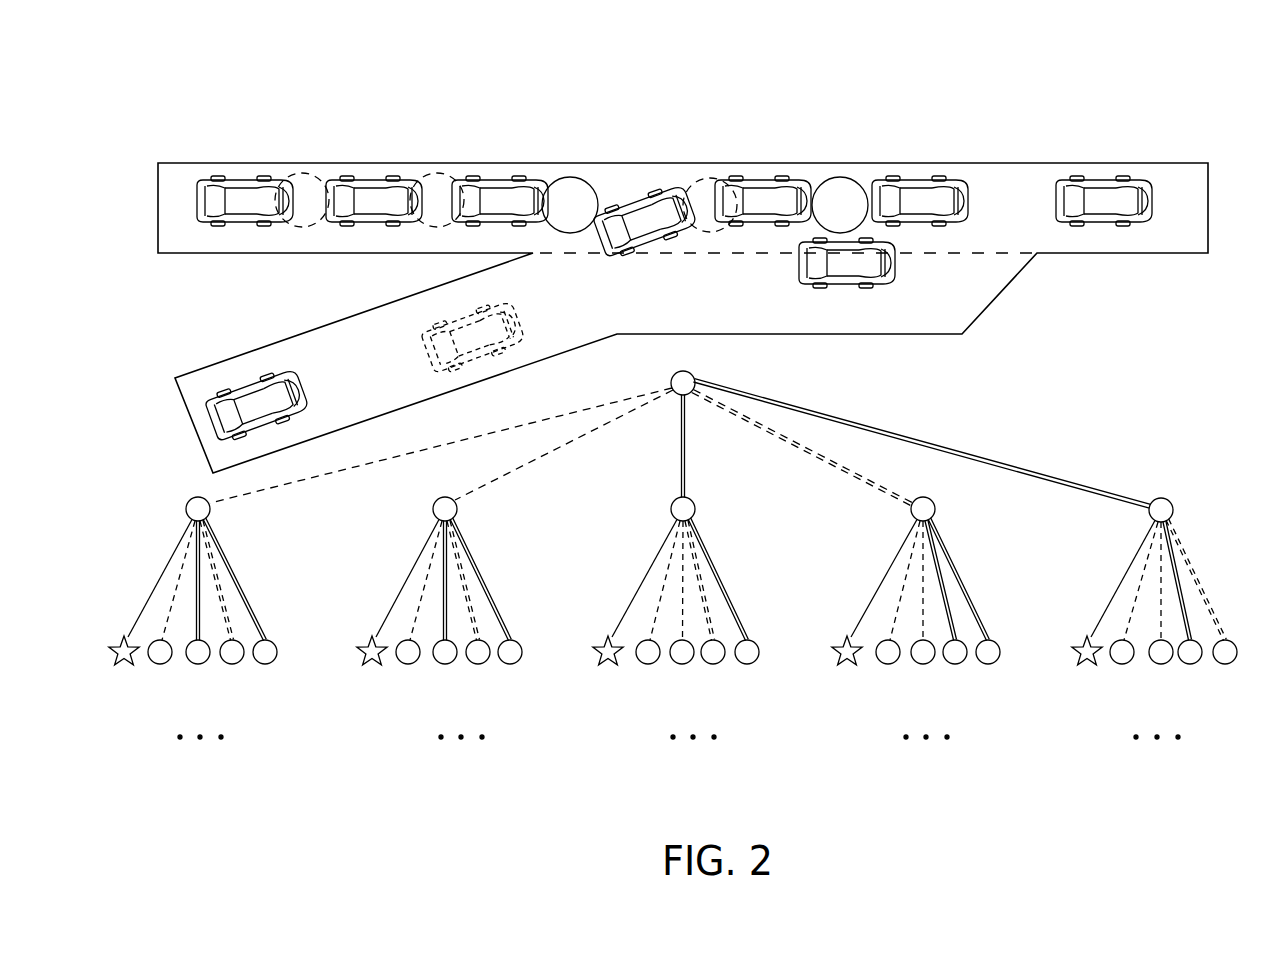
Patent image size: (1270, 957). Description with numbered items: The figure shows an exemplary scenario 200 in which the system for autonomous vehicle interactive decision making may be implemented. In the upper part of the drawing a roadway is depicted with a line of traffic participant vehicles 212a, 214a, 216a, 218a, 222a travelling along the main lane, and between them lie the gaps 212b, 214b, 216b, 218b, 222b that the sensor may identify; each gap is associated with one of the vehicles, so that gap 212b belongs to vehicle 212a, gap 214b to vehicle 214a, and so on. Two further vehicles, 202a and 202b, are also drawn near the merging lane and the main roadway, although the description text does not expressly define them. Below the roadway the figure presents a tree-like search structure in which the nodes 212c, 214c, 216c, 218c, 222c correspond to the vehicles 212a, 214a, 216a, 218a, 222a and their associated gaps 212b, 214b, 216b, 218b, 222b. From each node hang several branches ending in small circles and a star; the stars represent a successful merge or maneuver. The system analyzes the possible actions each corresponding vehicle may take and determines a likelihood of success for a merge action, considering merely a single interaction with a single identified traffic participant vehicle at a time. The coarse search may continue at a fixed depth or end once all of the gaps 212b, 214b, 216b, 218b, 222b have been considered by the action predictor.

The exemplary scenario 200 is at (206, 78).
The autonomous vehicle (predicted position) 202a is at (458, 318).
The autonomous vehicle 202b is at (840, 290).
The vehicle 212a is at (238, 178).
The gap 212b is at (298, 172).
The node 212c is at (186, 511).
The vehicle 214a is at (370, 178).
The gap 214b is at (437, 172).
The node 214c is at (433, 510).
The vehicle 216a is at (502, 178).
The gap 216b is at (570, 177).
The node 216c is at (697, 512).
The vehicle 218a is at (645, 197).
The gap 218b is at (710, 178).
The node 218c is at (935, 512).
The vehicle 222a is at (772, 178).
The gap 222b is at (845, 177).
The node 222c is at (1193, 488).